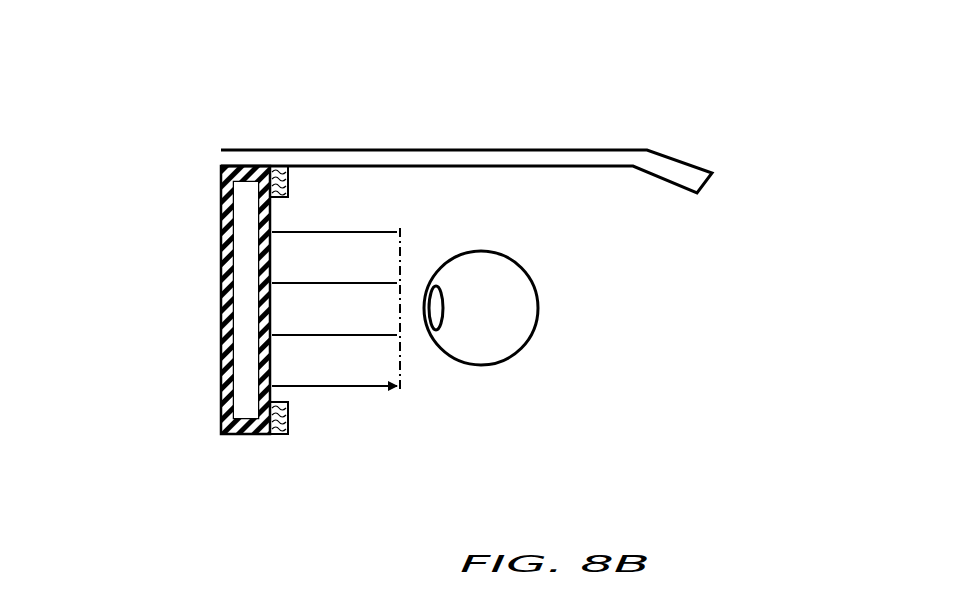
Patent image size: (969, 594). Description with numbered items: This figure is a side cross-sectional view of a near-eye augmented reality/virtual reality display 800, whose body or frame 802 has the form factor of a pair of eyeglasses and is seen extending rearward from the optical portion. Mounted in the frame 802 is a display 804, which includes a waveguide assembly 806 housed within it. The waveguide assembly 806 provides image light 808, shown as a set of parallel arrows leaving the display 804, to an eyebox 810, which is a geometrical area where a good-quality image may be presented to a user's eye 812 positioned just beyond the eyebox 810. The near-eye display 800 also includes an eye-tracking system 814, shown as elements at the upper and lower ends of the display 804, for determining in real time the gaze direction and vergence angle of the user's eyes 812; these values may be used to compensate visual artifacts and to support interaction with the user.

The near-eye AR/VR display 800 is at (268, 88).
The frame 802 is at (600, 155).
The display 804 is at (222, 184).
The waveguide assembly 806 is at (246, 272).
The image light 808 is at (348, 401).
The eyebox 810 is at (403, 378).
The user's eye 812 is at (528, 318).
The eye-tracking system 814 is at (284, 170).